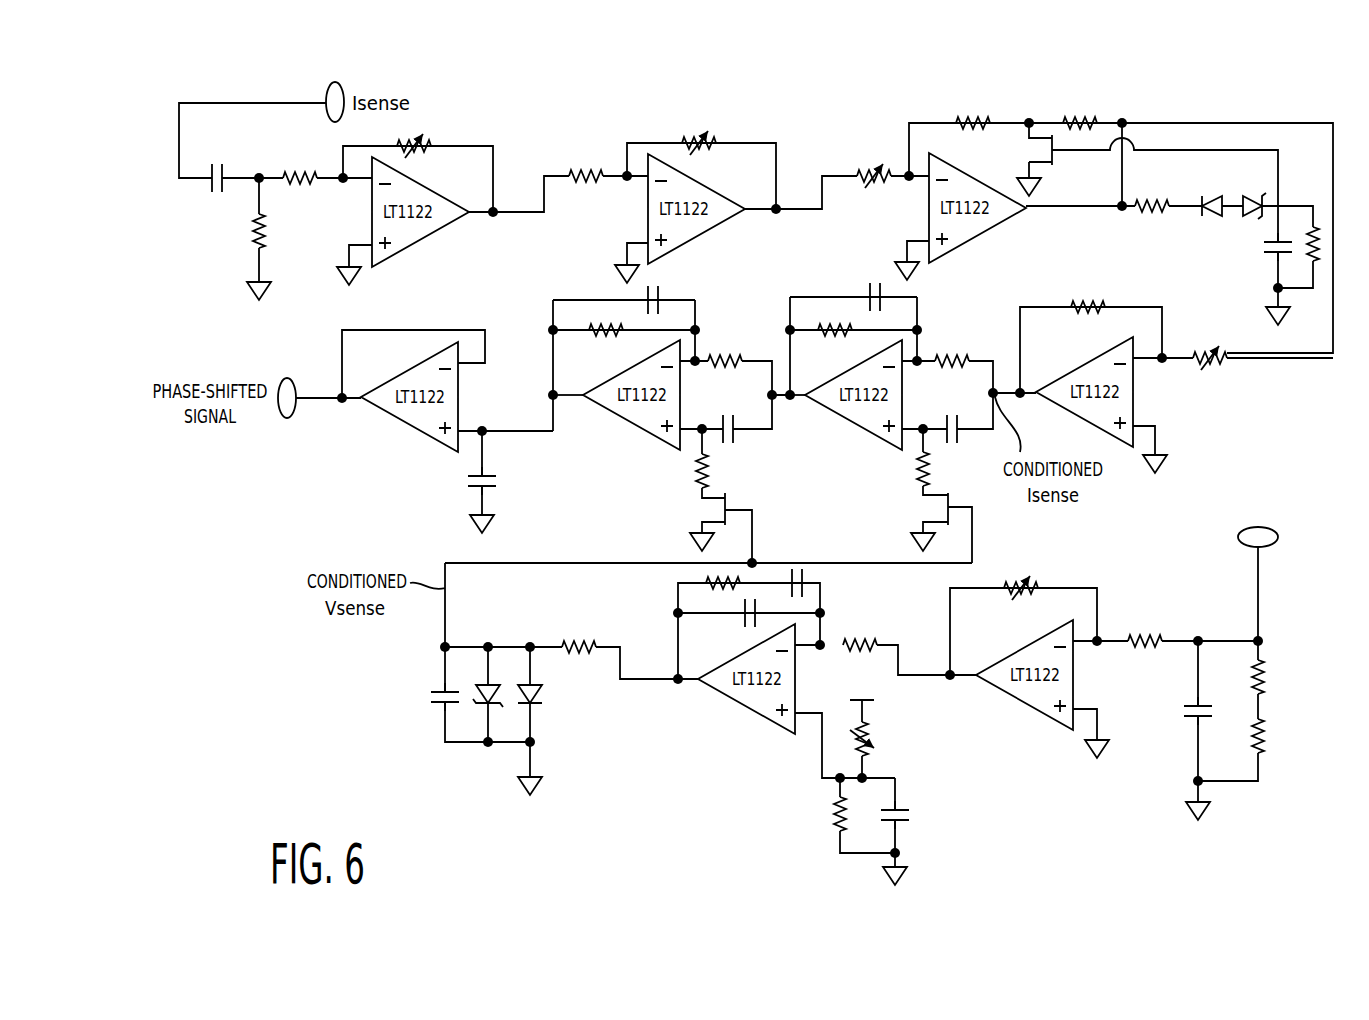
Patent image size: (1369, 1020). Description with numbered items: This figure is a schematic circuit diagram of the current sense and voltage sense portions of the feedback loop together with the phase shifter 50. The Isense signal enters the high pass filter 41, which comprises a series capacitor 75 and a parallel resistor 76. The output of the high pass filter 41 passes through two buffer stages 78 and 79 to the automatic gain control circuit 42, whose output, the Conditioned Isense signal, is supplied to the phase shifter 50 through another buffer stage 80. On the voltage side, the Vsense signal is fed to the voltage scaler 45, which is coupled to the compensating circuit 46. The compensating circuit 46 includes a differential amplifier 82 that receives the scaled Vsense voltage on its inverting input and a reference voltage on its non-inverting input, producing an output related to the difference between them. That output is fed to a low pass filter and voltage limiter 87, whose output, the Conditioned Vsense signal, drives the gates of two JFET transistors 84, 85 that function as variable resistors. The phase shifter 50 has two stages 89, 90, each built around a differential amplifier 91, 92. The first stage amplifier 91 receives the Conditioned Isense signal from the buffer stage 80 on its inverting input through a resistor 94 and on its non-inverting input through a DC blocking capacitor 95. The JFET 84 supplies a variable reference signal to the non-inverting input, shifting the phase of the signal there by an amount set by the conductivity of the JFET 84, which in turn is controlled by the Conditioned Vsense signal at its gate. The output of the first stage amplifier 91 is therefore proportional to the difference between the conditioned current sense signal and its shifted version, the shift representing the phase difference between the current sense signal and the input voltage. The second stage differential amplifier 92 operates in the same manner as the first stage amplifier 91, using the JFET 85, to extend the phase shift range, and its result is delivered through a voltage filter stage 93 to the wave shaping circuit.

The high pass filter 41 is at (296, 147).
The automatic gain control (AGC) circuit 42 is at (1114, 212).
The voltage scaler 45 is at (1117, 659).
The voltage compensator circuit 46 is at (909, 627).
The phase shifter 50 is at (687, 306).
The series capacitor 75 is at (219, 156).
The parallel resistor 76 is at (282, 239).
The buffer stage 78 is at (439, 197).
The buffer stage 79 is at (717, 194).
The buffer stage 80 is at (1176, 361).
The differential amplifier 82 is at (791, 727).
The JFET transistor 84 is at (927, 528).
The JFET transistor 85 is at (707, 528).
The low pass filter and voltage limiter 87 is at (514, 695).
The first stage 89 is at (881, 322).
The second stage 90 is at (735, 350).
The first stage differential amplifier 91 is at (846, 402).
The second stage differential amplifier 92 is at (616, 402).
The voltage filter stage 93 is at (447, 409).
The resistor 94 is at (969, 355).
The DC blocking capacitor 95 is at (947, 436).